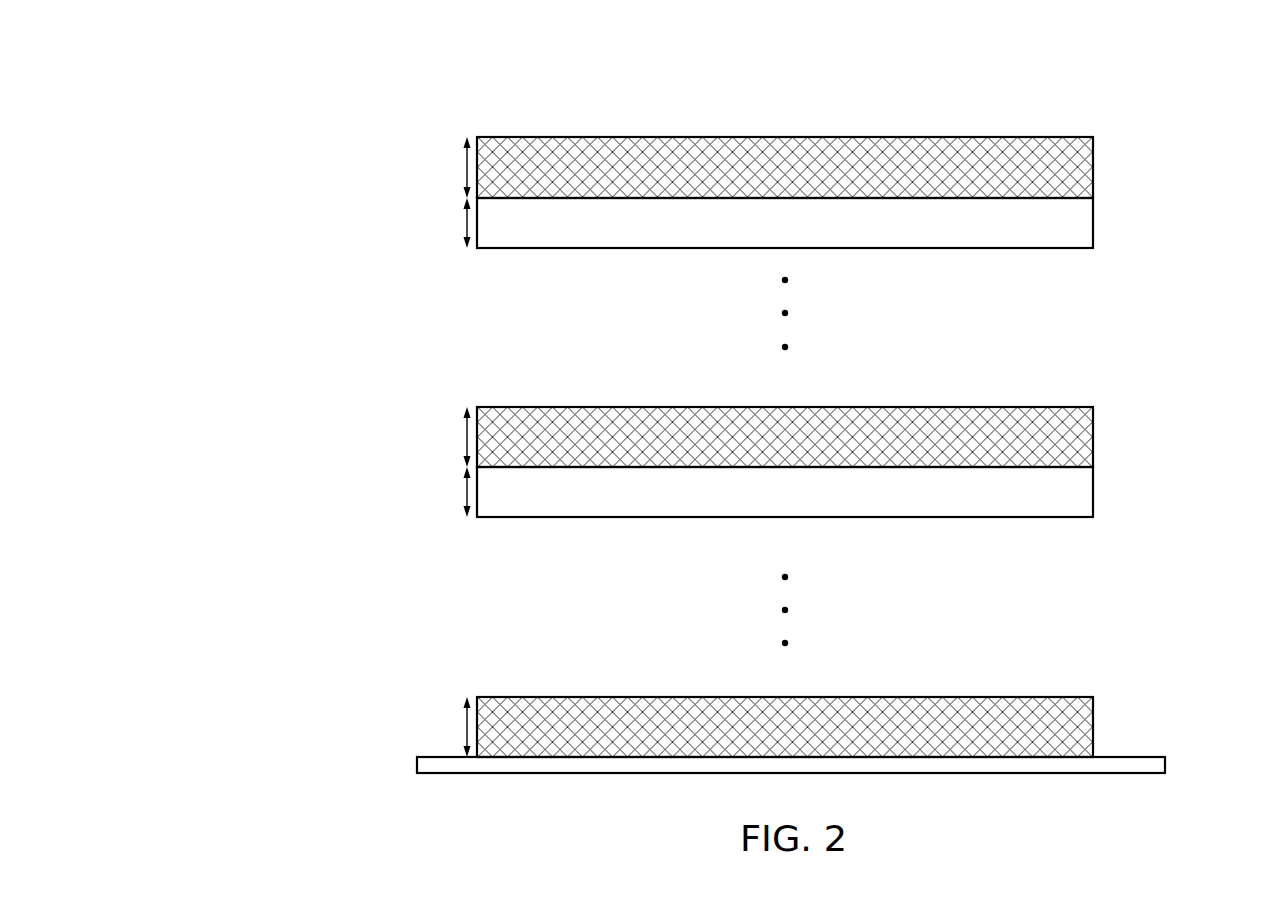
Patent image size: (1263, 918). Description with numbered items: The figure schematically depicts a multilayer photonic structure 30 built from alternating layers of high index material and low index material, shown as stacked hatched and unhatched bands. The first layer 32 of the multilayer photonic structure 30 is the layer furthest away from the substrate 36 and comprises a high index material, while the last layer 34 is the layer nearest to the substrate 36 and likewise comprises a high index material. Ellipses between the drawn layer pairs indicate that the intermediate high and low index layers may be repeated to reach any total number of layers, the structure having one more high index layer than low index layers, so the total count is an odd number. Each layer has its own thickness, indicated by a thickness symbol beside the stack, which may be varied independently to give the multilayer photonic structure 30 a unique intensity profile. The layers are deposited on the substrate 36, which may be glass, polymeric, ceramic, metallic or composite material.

The multilayer photonic structure 30 is at (262, 112).
The first layer 32 is at (1009, 126).
The last layer 34 is at (1009, 686).
The substrate 36 is at (1165, 766).